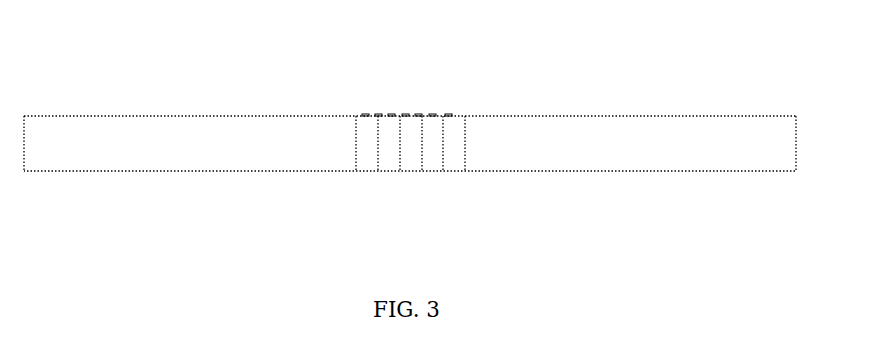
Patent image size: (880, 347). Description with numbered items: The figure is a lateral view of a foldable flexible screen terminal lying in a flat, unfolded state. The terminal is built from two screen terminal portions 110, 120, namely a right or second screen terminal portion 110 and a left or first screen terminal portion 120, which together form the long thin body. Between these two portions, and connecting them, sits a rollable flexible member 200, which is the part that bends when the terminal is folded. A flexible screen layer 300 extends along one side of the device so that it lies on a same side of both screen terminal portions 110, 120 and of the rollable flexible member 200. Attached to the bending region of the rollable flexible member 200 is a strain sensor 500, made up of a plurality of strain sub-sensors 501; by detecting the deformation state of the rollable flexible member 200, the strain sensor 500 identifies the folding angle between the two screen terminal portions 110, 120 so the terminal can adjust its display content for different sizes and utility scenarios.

The flexible screen layer 300 is at (177, 117).
The second screen terminal portion 110 is at (673, 160).
The first screen terminal portion 120 is at (153, 157).
The rollable flexible member 200 is at (407, 158).
The strain sensor 500 is at (409, 110).
The strain sub-sensor 501 is at (362, 113).